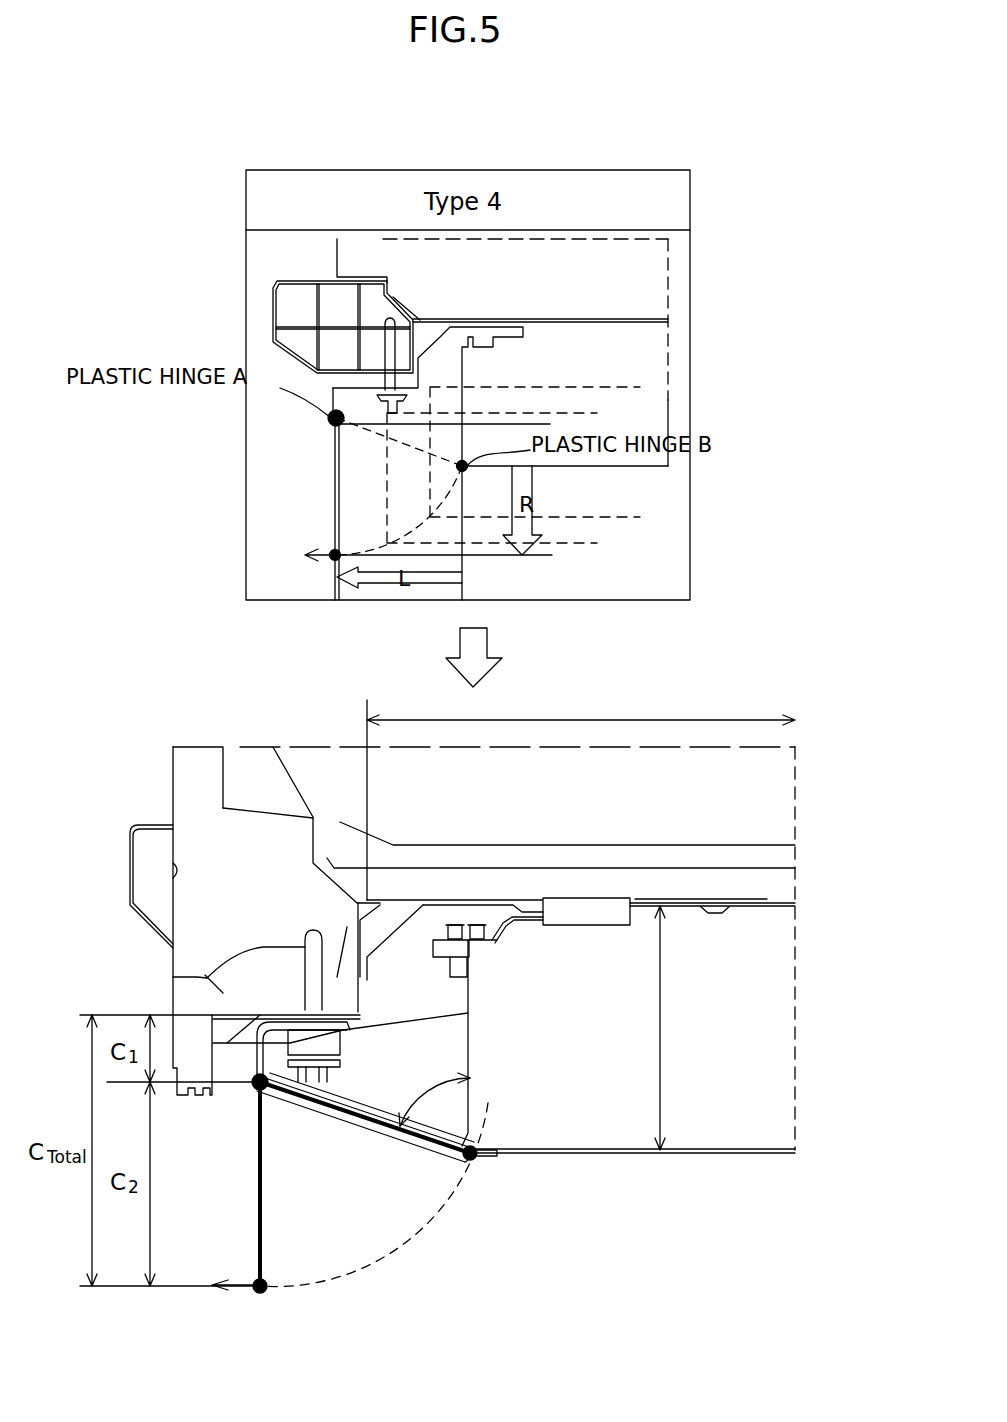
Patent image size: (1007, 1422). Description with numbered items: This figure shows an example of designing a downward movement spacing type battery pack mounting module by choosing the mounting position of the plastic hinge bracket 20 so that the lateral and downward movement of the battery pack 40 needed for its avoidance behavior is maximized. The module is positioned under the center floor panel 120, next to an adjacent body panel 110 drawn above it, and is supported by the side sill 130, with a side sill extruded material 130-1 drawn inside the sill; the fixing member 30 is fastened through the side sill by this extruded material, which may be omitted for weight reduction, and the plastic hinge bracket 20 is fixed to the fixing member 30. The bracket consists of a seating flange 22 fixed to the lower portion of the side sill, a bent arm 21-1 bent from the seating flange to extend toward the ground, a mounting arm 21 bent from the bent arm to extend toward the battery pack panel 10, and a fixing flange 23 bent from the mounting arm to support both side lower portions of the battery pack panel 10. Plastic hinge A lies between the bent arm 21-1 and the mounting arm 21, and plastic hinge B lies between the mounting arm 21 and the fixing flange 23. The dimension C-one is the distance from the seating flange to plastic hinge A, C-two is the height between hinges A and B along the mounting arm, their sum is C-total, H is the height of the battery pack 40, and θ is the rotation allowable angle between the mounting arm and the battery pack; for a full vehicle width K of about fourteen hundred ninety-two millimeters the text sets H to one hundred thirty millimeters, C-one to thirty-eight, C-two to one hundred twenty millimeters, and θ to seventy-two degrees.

The battery pack panel 10 is at (747, 1150).
The plastic hinge bracket 20 is at (335, 490).
The mounting arm 21 is at (357, 1127).
The bent arm 21-1 is at (257, 1057).
The seating flange 22 is at (283, 1007).
The fixing flange 23 is at (488, 1157).
The fixing member 30 is at (310, 930).
The battery pack 40 is at (635, 358).
The hood outer panel 110 is at (678, 843).
The center floor panel 120 is at (600, 320).
The side sill 130 is at (358, 270).
The side sill extruded material 130-1 is at (318, 308).